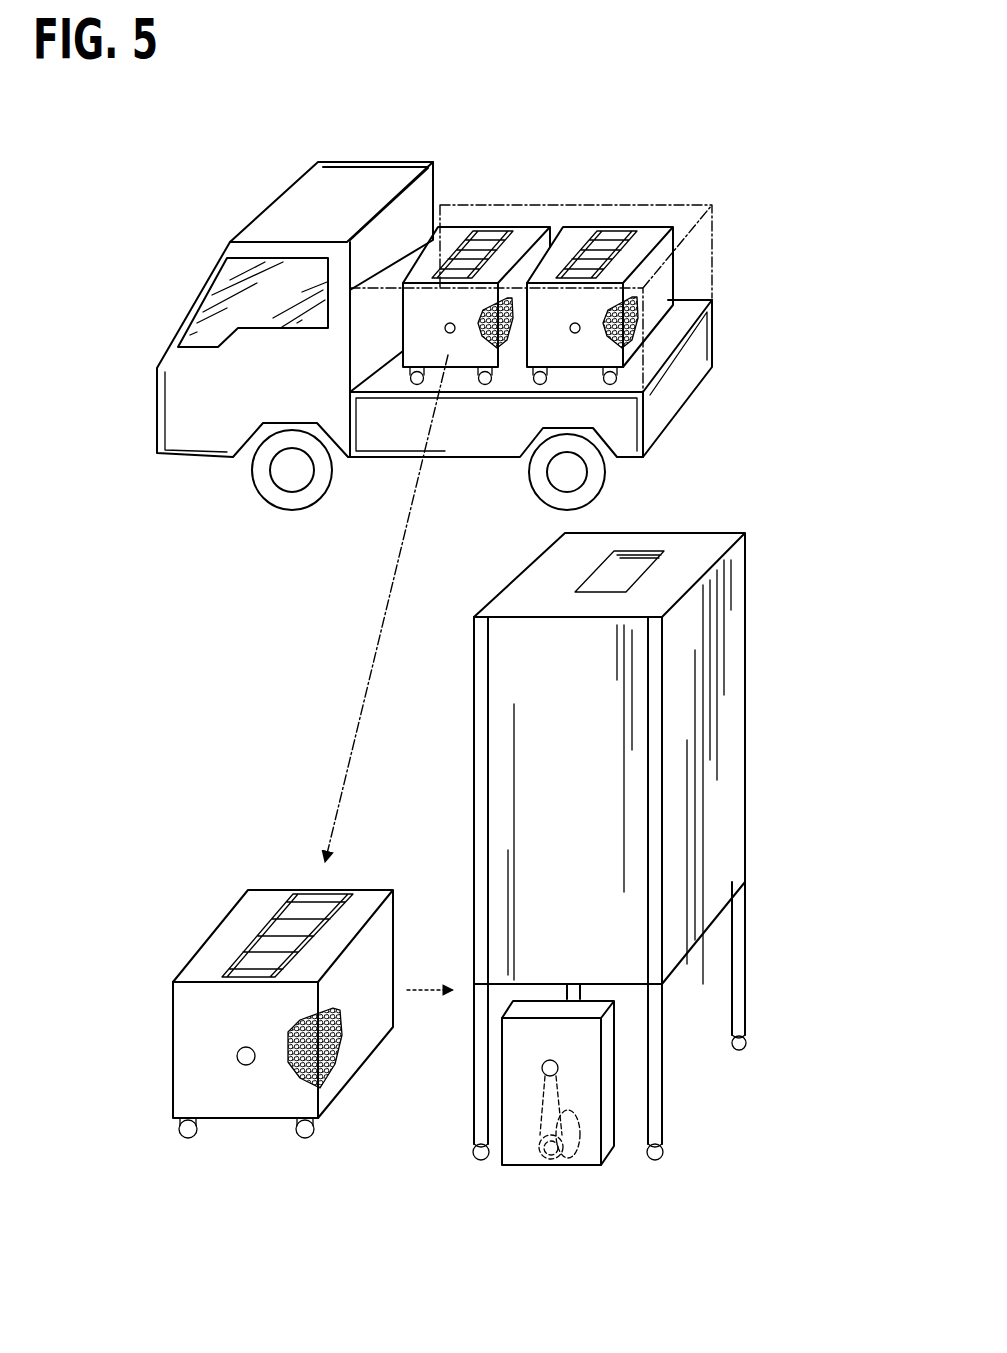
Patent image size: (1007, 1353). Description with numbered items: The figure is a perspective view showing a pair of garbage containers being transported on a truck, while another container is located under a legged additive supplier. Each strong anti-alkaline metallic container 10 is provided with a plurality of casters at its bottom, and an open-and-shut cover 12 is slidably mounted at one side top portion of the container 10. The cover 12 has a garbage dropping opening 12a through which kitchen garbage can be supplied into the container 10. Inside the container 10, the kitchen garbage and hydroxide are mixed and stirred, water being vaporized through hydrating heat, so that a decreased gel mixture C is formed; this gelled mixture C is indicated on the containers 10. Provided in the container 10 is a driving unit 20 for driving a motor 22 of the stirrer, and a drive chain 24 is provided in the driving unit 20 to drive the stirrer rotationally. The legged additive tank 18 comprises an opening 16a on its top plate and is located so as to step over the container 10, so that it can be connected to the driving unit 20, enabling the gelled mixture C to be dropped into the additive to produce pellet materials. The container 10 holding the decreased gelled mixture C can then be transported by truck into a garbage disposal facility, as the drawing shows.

The metallic container 10 is at (541, 221).
The open-and-shut cover 12 is at (457, 236).
The garbage dropping opening 12a is at (488, 250).
The decreased gel mixture C is at (512, 345).
The opening on top plate 16a is at (631, 553).
The legged additive tank 18 is at (749, 708).
The driving unit 20 is at (523, 1167).
The motor 22 is at (582, 1146).
The drive chain 24 is at (563, 1091).